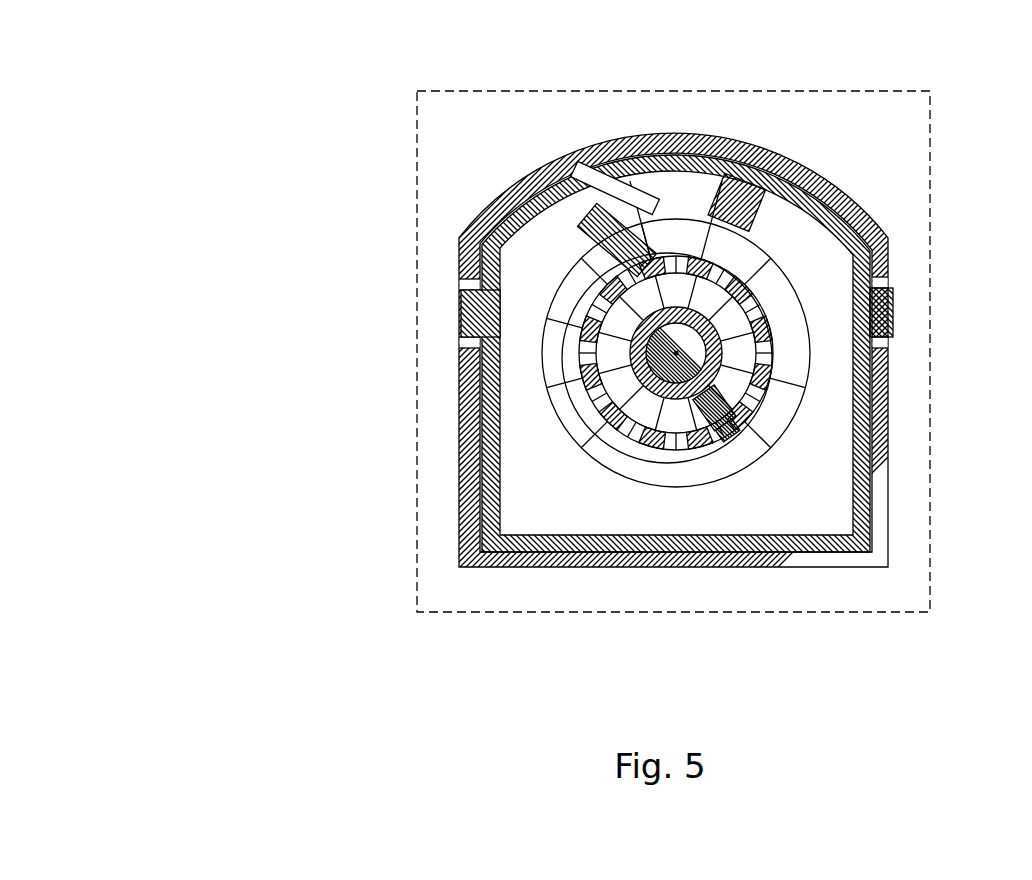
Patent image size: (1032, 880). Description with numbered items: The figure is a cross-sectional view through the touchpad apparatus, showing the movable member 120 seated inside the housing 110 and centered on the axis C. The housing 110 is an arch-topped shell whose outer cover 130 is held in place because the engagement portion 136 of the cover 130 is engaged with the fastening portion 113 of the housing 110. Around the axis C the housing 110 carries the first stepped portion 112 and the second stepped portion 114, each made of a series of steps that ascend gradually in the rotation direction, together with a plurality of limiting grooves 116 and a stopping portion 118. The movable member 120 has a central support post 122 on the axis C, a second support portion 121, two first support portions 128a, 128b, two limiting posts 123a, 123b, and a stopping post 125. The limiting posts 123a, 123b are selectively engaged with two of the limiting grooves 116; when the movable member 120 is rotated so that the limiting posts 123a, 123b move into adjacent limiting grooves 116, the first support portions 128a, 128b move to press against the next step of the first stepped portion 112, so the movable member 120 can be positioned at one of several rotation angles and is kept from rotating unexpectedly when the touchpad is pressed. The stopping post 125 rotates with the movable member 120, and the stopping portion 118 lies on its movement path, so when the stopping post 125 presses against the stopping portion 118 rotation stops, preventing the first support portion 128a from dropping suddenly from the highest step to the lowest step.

The housing 110 is at (98, 415).
The first stepped portion 112 is at (738, 388).
The fastening portion 113 is at (882, 320).
The second stepped portion 114 is at (555, 368).
The limiting grooves 116 is at (734, 434).
The stopping portion 118 is at (650, 178).
The movable member 120 is at (98, 558).
The second support portion 121 is at (640, 283).
The support post 122 is at (623, 330).
The limiting post 123a is at (708, 432).
The limiting post 123b is at (662, 258).
The stopping post 125 is at (567, 180).
The first support portion 128a is at (676, 400).
The first support portion 128b is at (582, 338).
The cover 130 is at (770, 153).
The engagement portion 136 is at (888, 285).
The axis C is at (676, 353).